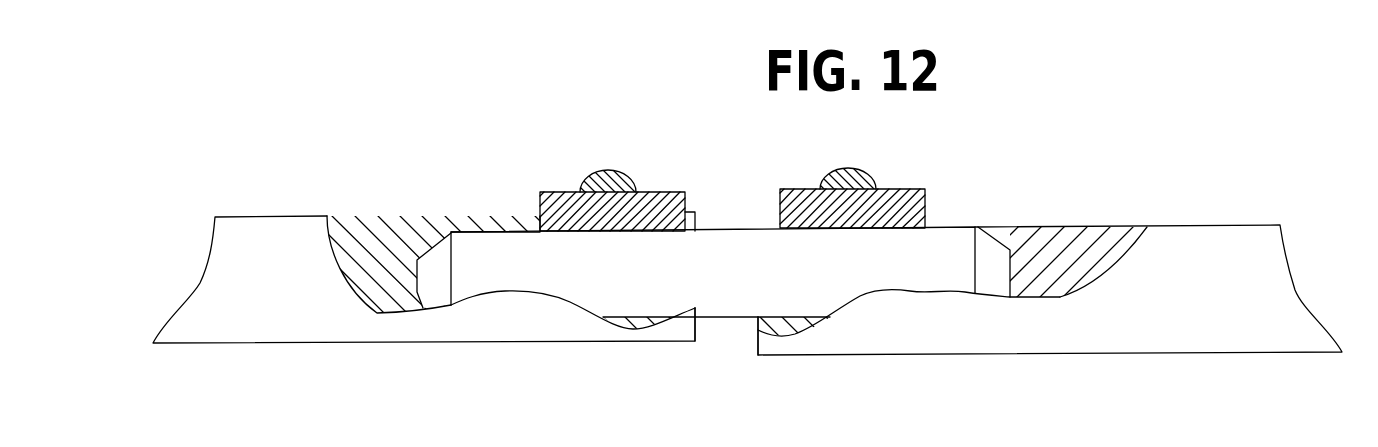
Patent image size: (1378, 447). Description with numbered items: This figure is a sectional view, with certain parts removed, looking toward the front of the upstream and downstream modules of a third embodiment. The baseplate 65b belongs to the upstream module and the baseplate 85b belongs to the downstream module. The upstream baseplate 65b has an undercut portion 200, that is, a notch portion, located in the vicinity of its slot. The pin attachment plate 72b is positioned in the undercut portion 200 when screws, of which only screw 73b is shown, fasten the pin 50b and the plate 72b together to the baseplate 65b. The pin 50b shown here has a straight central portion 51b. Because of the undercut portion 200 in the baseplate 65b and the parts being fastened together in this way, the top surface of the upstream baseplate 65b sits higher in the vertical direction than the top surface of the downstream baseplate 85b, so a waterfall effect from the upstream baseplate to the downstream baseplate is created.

The pin 50b is at (868, 292).
The straight central portion 51b is at (723, 303).
The baseplate 65b is at (344, 222).
The pin attachment plate 72b is at (557, 193).
The screw 73b is at (608, 171).
The baseplate 85b is at (1092, 232).
The undercut portion 200 is at (535, 214).